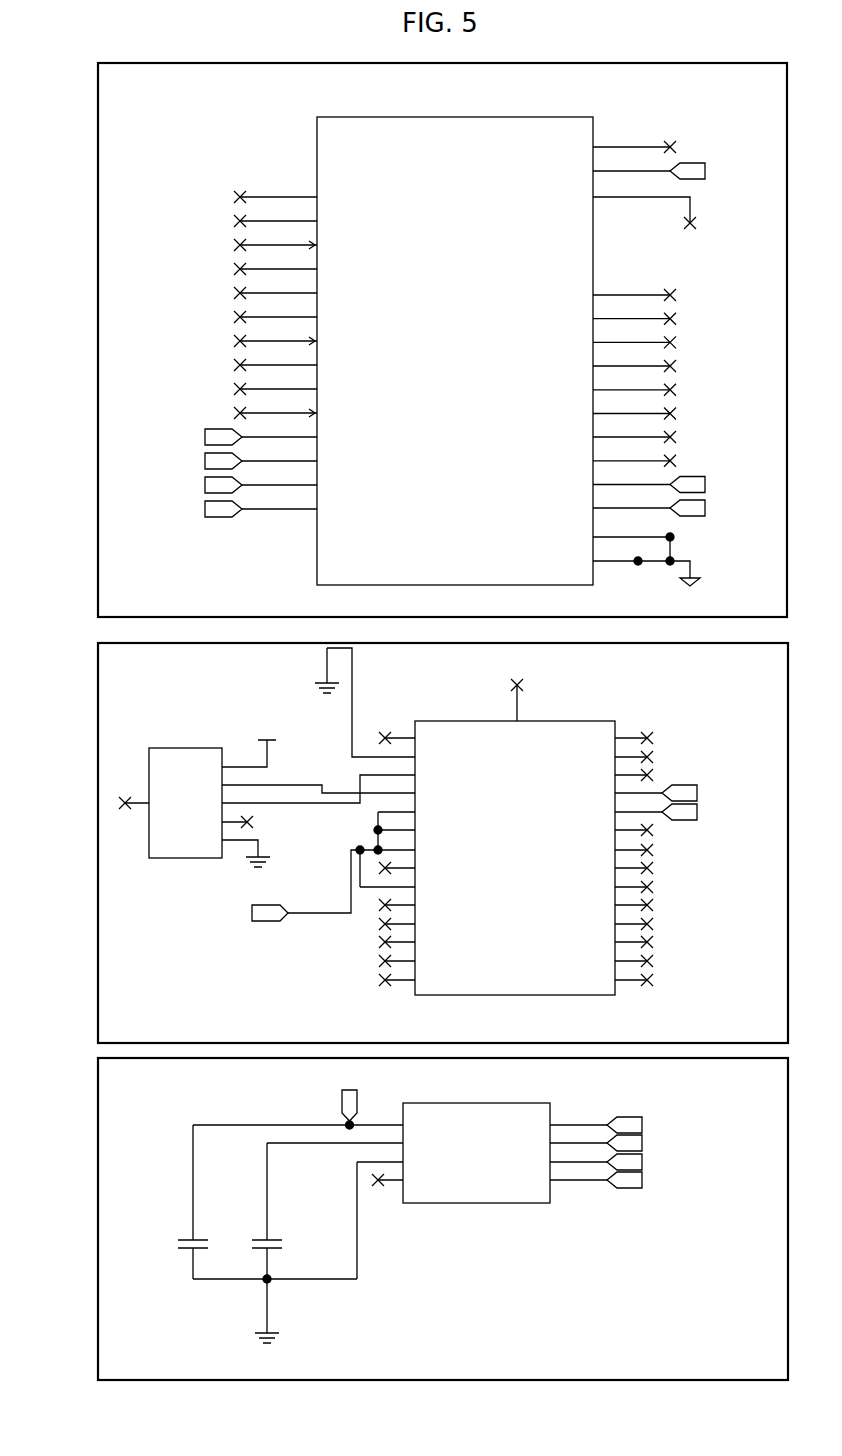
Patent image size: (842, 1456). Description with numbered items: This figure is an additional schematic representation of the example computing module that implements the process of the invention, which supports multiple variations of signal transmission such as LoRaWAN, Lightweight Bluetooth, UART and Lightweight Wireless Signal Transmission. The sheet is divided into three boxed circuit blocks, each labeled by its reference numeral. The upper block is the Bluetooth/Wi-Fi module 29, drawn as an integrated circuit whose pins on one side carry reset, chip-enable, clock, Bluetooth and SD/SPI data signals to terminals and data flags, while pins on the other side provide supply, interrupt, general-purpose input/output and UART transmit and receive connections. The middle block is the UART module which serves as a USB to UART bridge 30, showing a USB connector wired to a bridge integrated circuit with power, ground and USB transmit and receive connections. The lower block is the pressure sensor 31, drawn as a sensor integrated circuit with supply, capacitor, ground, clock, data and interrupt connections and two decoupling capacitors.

The Bluetooth/Wi-Fi module 29 is at (98, 340).
The UART module serving as a USB to UART bridge 30 is at (98, 843).
The pressure sensor 31 is at (98, 1218).